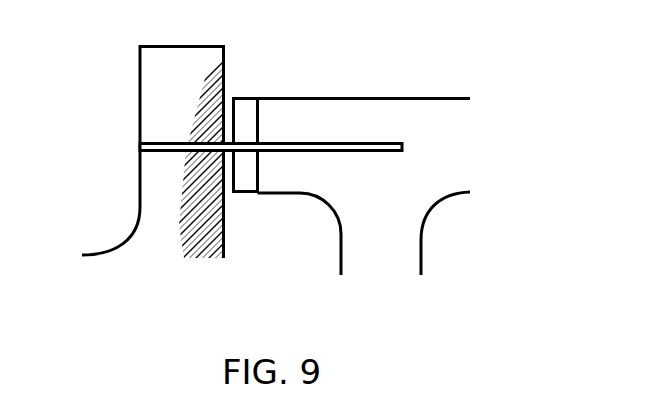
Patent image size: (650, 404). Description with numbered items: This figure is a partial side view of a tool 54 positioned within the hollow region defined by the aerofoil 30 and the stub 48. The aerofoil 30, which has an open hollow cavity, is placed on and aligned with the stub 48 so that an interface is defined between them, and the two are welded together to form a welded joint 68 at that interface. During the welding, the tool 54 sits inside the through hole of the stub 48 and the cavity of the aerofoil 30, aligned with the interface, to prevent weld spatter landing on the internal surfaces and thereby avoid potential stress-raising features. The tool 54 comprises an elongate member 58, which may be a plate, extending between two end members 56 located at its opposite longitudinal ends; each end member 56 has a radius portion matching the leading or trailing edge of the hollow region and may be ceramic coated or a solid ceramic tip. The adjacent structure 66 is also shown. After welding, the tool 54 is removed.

The aerofoil 30 is at (159, 91).
The stub 48 is at (192, 275).
The tool 54 is at (400, 89).
The end member 56 is at (244, 118).
The elongate member 58 is at (447, 97).
The curved member 66 is at (390, 251).
The welded joint 68 is at (114, 146).